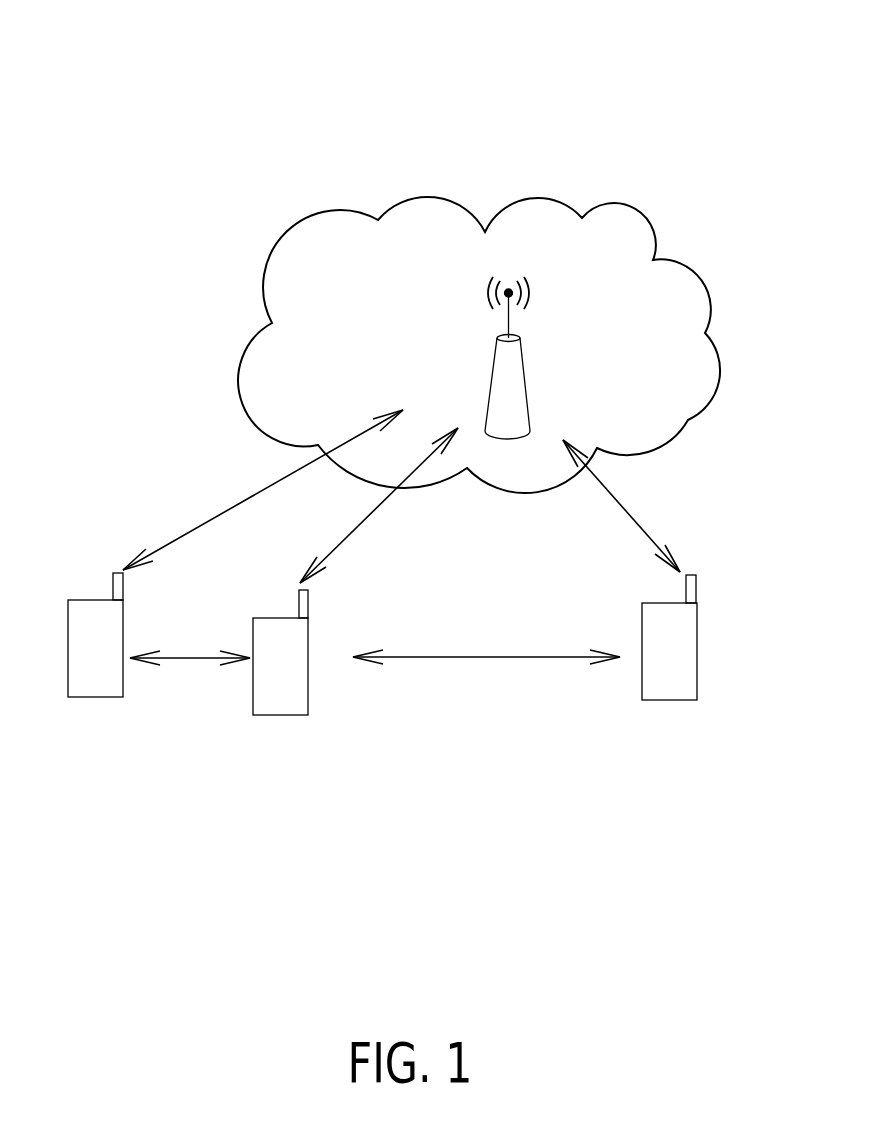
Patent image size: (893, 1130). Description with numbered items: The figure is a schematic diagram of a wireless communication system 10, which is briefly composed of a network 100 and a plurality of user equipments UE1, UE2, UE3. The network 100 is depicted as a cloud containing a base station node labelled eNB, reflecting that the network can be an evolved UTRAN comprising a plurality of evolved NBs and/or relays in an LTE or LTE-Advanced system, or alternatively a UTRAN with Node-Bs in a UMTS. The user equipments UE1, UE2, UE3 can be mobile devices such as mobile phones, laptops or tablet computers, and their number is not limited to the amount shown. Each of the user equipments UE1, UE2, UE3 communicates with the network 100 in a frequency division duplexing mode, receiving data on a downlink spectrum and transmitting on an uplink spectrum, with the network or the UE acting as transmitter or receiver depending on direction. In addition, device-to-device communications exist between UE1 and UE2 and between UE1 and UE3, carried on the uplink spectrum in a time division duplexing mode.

The wireless communication system 10 is at (597, 75).
The network 100 is at (633, 212).
The evolved Node-B eNB is at (469, 358).
The user equipment UE1 is at (280, 675).
The user equipment UE2 is at (670, 660).
The user equipment UE3 is at (95, 657).